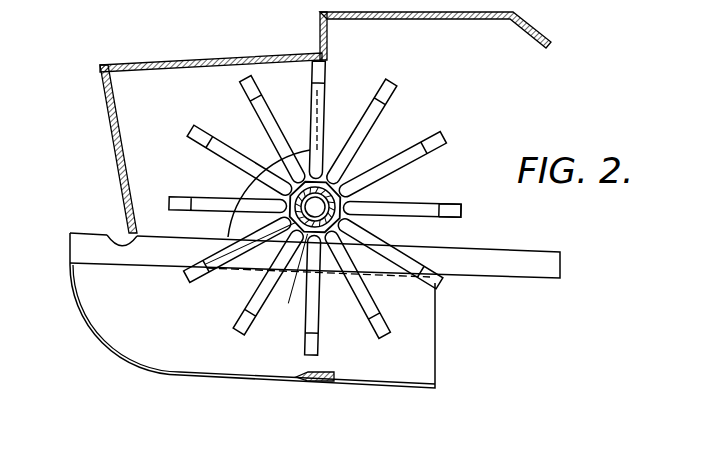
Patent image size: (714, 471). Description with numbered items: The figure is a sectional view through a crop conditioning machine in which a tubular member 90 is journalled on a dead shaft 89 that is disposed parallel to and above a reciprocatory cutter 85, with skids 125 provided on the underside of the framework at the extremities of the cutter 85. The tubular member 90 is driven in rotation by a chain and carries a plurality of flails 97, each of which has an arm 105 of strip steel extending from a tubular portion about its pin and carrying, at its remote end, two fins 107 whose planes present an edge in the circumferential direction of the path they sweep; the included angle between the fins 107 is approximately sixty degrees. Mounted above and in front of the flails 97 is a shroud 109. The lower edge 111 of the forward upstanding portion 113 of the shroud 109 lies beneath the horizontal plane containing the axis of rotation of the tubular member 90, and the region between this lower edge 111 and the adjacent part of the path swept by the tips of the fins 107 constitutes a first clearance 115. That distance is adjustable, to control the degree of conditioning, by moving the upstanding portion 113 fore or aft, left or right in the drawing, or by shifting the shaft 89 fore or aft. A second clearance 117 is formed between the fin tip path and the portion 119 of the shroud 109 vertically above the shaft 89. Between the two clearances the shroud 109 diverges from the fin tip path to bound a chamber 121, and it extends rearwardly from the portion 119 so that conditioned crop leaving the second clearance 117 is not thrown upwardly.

The reciprocatory cutter 85 is at (325, 383).
The shaft 89 is at (340, 165).
The tubular member 90 is at (262, 268).
The flails 97 is at (455, 141).
The arm 105 is at (420, 209).
The fins 107 is at (460, 208).
The shroud 109 is at (197, 62).
The lower edge 111 is at (108, 237).
The upstanding portion 113 is at (110, 115).
The first clearance 115 is at (160, 233).
The second clearance 117 is at (327, 54).
The portion 119 is at (319, 50).
The chamber 121 is at (148, 94).
The skids 125 is at (178, 377).